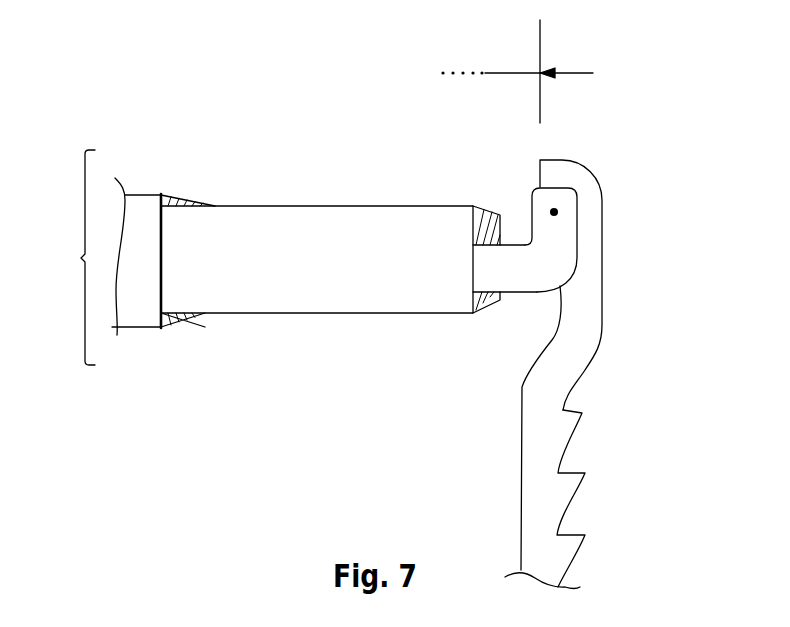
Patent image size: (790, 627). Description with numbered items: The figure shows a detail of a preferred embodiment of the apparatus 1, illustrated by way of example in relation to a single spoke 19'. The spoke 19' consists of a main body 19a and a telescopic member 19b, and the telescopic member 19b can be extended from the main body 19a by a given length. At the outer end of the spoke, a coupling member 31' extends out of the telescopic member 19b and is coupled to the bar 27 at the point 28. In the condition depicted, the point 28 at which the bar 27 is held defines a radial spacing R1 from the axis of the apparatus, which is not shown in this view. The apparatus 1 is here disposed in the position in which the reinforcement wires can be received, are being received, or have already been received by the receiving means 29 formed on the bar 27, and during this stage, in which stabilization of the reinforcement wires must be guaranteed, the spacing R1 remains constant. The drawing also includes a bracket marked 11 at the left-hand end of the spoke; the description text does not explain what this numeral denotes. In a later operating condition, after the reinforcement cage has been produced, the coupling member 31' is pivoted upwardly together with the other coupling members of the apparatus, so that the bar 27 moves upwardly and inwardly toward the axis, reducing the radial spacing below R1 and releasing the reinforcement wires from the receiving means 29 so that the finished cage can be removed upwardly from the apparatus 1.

The apparatus 1 is at (164, 78).
The spoke 19' is at (314, 238).
The counterpart / receiving region 11 is at (73, 257).
The main body 19a is at (135, 313).
The telescopic member 19b is at (300, 297).
The coupling member 31' is at (514, 233).
The point 28 is at (566, 200).
The bar 27 is at (583, 297).
The receiving means 29 is at (592, 455).
The radial spacing R1 is at (517, 71).